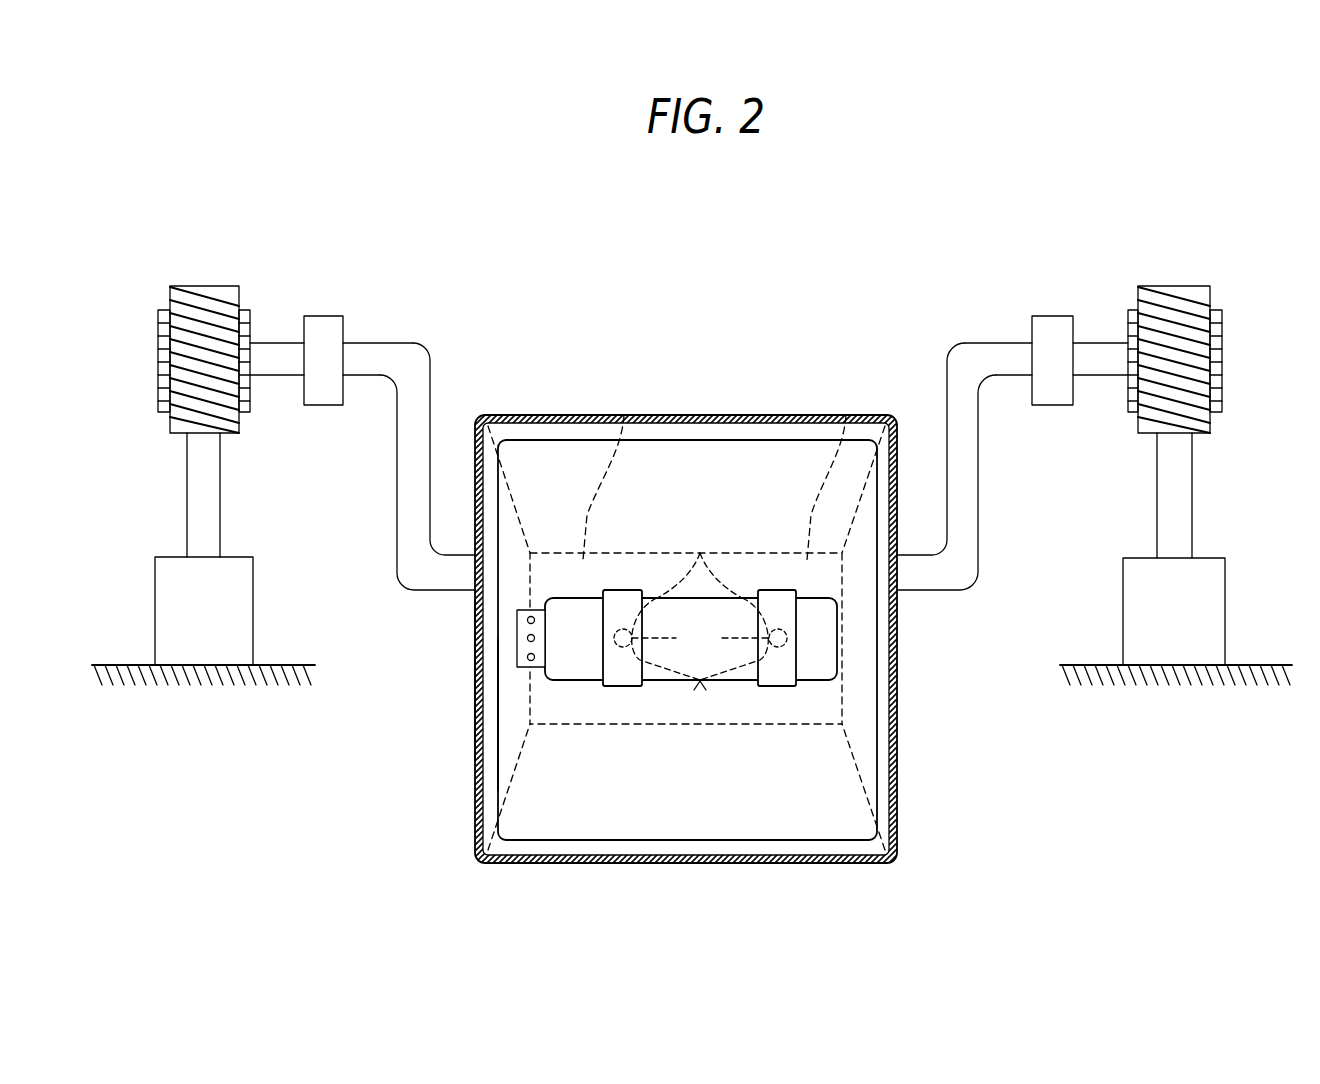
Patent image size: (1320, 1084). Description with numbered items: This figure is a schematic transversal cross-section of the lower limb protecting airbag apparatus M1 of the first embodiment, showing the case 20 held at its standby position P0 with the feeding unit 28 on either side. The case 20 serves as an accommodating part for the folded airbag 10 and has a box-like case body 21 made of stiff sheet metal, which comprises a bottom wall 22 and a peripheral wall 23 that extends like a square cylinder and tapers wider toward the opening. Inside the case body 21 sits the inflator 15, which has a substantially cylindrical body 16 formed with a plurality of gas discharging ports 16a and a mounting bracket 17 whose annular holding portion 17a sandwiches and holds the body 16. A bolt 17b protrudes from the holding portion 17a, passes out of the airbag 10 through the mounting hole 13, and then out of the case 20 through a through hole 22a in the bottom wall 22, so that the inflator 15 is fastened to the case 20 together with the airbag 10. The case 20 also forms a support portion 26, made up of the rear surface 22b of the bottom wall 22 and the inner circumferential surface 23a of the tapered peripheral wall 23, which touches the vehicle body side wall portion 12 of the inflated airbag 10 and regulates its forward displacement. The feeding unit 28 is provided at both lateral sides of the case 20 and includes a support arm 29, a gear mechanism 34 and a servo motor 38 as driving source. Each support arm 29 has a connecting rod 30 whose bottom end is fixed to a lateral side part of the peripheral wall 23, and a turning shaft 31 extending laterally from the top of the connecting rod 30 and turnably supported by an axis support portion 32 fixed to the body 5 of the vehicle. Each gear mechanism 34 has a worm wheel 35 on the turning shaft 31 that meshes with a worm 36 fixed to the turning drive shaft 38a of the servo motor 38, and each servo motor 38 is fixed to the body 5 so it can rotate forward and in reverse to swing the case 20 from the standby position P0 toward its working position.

The body 5 is at (197, 684).
The airbag 10 is at (687, 599).
The vehicle body side wall portion 12 is at (748, 457).
The mounting hole 13 is at (700, 553).
The inflator 15 is at (624, 707).
The body 16 is at (573, 668).
The gas discharging ports 16a is at (519, 633).
The mounting bracket 17 is at (725, 681).
The holding portion 17a is at (623, 688).
The bolt 17b is at (700, 639).
The case 20 is at (611, 672).
The standby position P0 is at (686, 639).
The case body 21 is at (663, 865).
The bottom wall 22 is at (846, 415).
The through hole 22a is at (702, 700).
The rear surface 22b is at (637, 458).
The peripheral wall 23 is at (475, 676).
The inner circumferential surface 23a is at (492, 717).
The support portion 26 is at (624, 415).
The feeding unit 28 is at (689, 470).
The support arm 29 is at (689, 401).
The connecting rod 30 is at (431, 437).
The turning shaft 31 is at (371, 343).
The axis support portion 32 is at (325, 403).
The gear mechanism 34 is at (690, 346).
The worm wheel 35 is at (242, 418).
The worm 36 is at (203, 298).
The servo motor 38 is at (243, 604).
The turning drive shaft 38a is at (187, 496).
The lower limb protecting airbag apparatus M1 is at (664, 672).